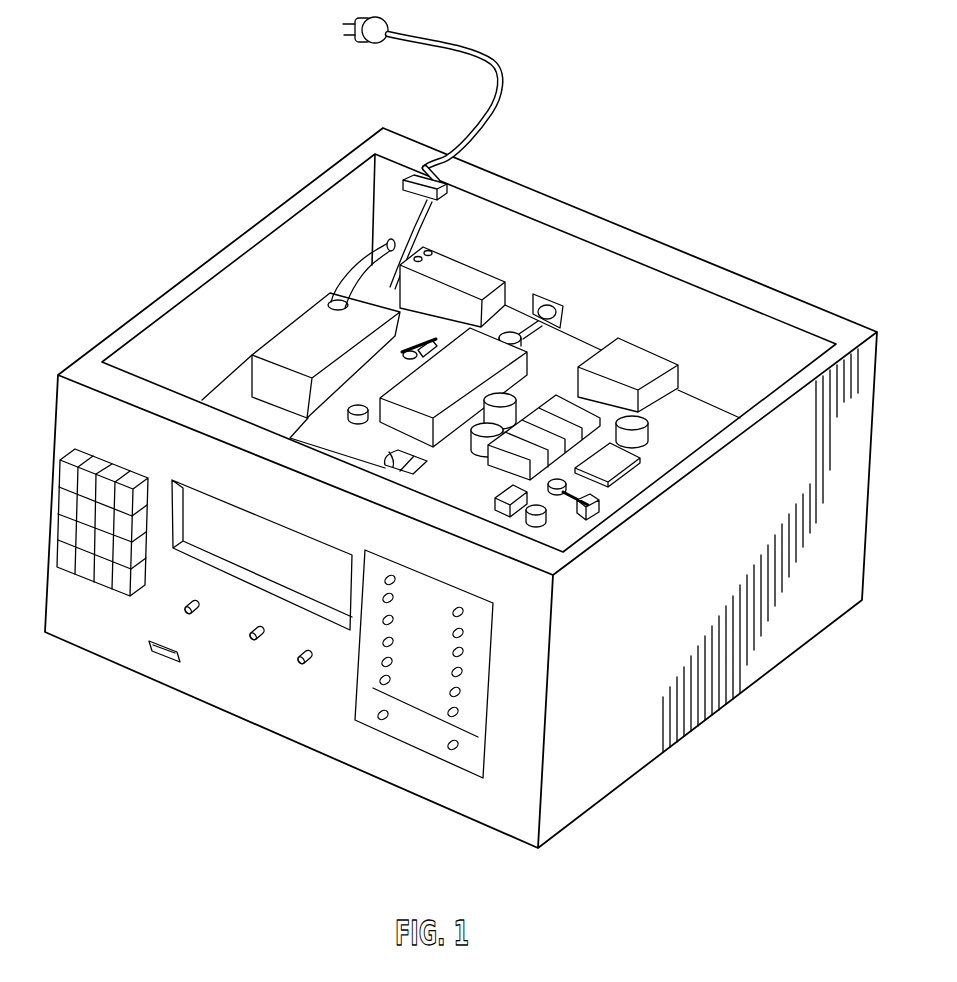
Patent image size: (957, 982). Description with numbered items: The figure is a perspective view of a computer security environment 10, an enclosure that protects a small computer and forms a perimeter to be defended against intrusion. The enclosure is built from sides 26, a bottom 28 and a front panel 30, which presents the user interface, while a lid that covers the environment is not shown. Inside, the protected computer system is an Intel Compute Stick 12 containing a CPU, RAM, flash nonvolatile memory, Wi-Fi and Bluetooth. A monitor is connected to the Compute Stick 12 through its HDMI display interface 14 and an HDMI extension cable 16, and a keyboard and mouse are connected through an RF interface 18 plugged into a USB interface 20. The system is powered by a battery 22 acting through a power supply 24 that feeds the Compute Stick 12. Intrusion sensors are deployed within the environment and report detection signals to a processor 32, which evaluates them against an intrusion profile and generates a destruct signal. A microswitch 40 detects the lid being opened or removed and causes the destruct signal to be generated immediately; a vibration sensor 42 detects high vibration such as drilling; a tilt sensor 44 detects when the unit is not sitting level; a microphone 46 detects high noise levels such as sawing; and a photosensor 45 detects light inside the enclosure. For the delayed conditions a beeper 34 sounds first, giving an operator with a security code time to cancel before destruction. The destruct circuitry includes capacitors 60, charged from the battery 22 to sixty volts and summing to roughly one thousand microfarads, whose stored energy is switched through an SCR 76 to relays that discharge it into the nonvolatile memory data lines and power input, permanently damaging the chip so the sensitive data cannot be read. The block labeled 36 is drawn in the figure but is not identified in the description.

The computer security environment 10 is at (647, 177).
The Intel Compute Stick 12 is at (480, 367).
The HDMI display interface 14 is at (508, 330).
The HDMI extension cable 16 is at (561, 293).
The RF interface 18 is at (400, 345).
The USB interface 20 is at (434, 347).
The battery 22 is at (448, 266).
The power supply 24 is at (642, 379).
The sides 26 is at (222, 341).
The bottom 28 is at (247, 409).
The front panel 30 is at (272, 499).
The processor 32 is at (619, 477).
The beeper 34 is at (648, 426).
The transformer box 36 is at (334, 342).
The microswitch 40 is at (427, 201).
The vibration sensor 42 is at (600, 504).
The tilt sensor 44 is at (501, 493).
The photosensor 45 is at (357, 420).
The microphone 46 is at (536, 523).
The capacitors 60 is at (477, 422).
The SCR 76 is at (396, 451).